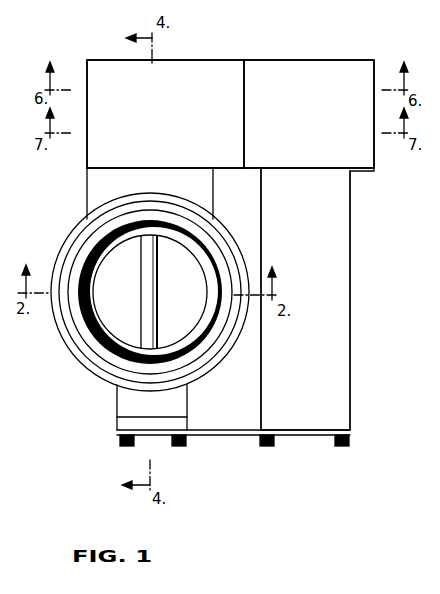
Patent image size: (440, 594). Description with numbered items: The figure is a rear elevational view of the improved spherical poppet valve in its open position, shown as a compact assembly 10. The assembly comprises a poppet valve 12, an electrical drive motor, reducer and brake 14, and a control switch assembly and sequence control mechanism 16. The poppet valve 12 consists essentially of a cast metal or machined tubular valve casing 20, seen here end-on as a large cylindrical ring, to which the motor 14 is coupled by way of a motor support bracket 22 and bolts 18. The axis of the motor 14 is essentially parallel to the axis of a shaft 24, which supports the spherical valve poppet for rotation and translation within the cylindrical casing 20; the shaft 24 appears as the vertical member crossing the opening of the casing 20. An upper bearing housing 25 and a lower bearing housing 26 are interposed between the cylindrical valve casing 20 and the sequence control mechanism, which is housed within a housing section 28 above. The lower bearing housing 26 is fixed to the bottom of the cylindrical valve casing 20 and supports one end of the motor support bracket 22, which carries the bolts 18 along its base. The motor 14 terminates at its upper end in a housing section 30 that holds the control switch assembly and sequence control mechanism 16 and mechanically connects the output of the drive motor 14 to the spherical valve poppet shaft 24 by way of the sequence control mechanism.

The compact assembly 10 is at (354, 241).
The poppet valve 12 is at (212, 360).
The electrical drive motor, reducer and brake 14 is at (335, 380).
The control switch assembly and sequence control mechanism 16 is at (233, 61).
The bolts 18 is at (170, 440).
The tubular valve casing 20 is at (96, 382).
The motor support bracket 22 is at (221, 436).
The shaft 24 is at (150, 300).
The upper bearing housing 25 is at (200, 188).
The lower bearing housing 26 is at (178, 405).
The housing section 28 is at (183, 60).
The housing section 30 is at (333, 60).